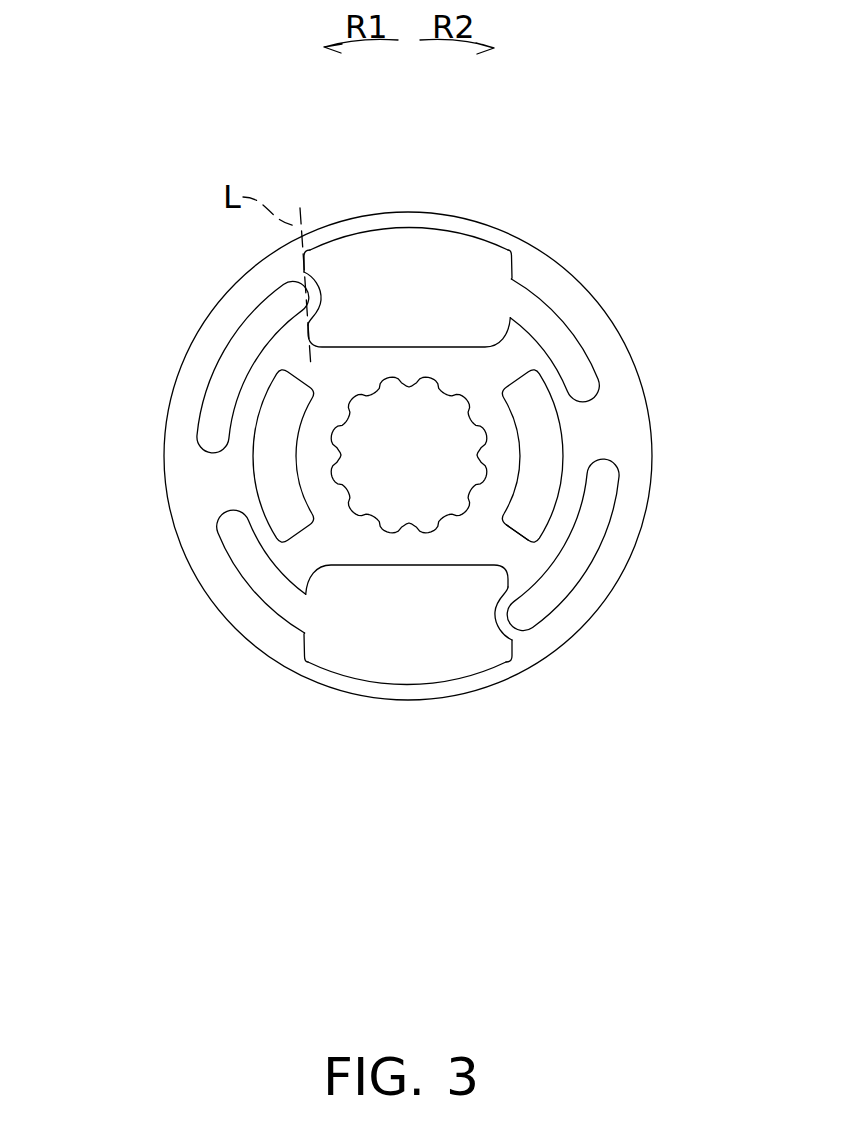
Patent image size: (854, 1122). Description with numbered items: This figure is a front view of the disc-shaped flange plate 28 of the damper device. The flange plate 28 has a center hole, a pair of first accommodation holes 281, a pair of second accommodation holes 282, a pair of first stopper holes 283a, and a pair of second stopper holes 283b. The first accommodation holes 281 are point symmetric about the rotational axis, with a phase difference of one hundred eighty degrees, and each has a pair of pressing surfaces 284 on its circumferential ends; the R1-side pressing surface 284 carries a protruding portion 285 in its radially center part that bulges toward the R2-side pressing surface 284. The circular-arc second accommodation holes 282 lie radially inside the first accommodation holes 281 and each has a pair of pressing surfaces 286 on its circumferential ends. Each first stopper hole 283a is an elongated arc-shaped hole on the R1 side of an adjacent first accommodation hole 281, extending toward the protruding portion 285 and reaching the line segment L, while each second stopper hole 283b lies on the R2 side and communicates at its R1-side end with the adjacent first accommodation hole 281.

The flange plate 28 is at (588, 217).
The first accommodation hole 281 is at (408, 229).
The second accommodation hole 282 is at (266, 453).
The first stopper hole 283a is at (222, 354).
The second stopper hole 283b is at (558, 326).
The pressing surface 284 is at (306, 258).
The protruding portion 285 is at (314, 297).
The pressing surface 286 is at (524, 536).